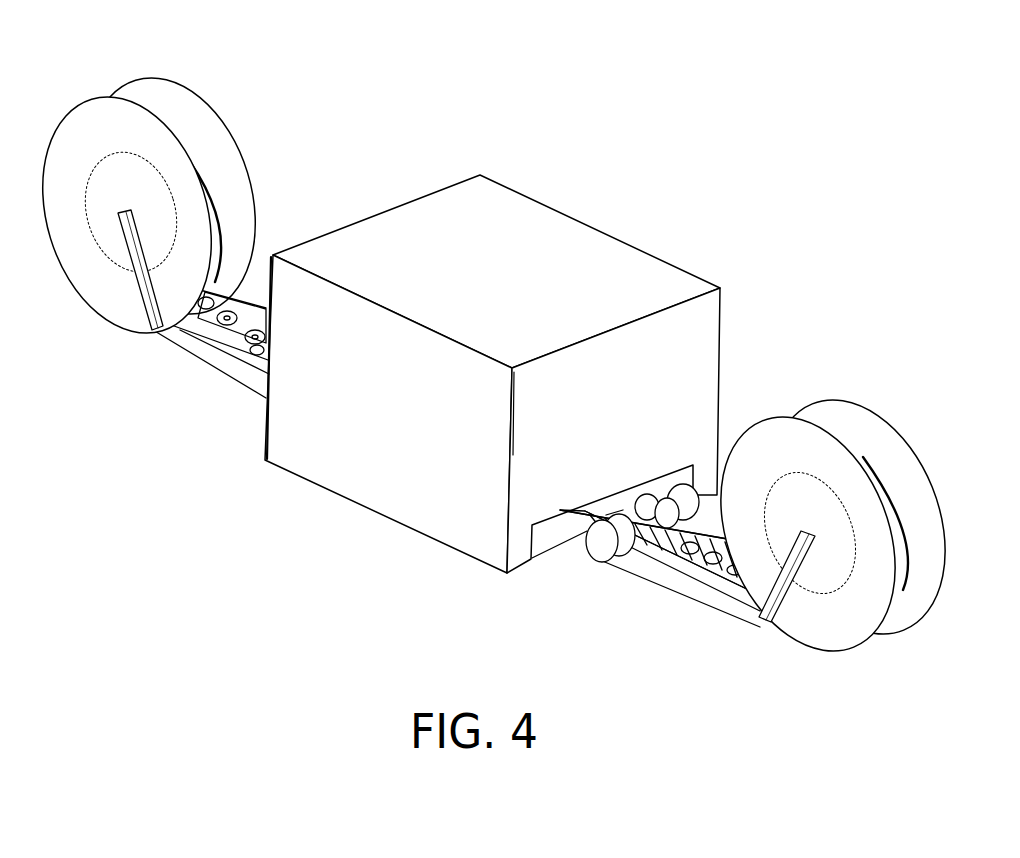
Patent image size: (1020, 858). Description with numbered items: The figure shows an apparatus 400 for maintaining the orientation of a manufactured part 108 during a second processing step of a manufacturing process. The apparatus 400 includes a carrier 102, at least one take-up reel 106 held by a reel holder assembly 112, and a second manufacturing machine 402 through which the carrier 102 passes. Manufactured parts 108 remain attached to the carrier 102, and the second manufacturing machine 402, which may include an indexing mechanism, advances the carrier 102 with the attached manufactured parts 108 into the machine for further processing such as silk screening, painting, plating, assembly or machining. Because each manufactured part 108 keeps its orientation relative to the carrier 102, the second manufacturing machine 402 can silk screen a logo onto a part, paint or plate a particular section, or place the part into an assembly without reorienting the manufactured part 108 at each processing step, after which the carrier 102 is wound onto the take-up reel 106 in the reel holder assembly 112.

The apparatus 400 is at (306, 76).
The second manufacturing machine 402 is at (631, 249).
The carrier 102 is at (260, 306).
The take-up reel 106 is at (132, 327).
The manufactured part 108 is at (258, 353).
The reel holder assembly 112 is at (205, 371).